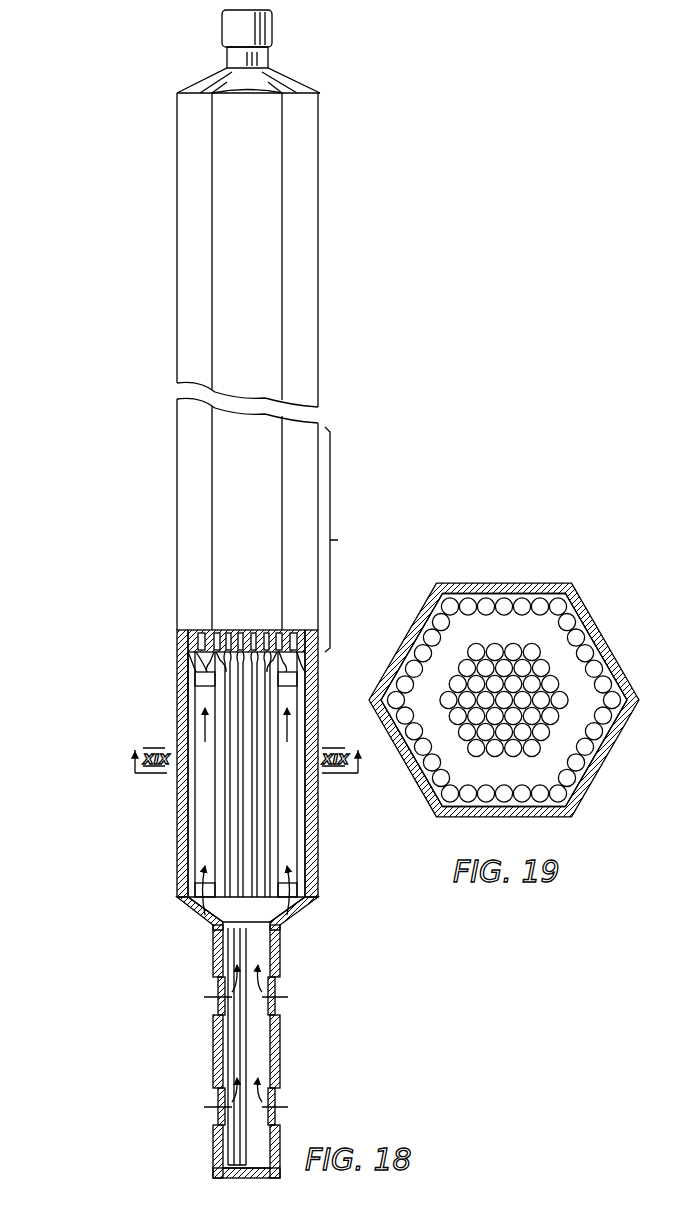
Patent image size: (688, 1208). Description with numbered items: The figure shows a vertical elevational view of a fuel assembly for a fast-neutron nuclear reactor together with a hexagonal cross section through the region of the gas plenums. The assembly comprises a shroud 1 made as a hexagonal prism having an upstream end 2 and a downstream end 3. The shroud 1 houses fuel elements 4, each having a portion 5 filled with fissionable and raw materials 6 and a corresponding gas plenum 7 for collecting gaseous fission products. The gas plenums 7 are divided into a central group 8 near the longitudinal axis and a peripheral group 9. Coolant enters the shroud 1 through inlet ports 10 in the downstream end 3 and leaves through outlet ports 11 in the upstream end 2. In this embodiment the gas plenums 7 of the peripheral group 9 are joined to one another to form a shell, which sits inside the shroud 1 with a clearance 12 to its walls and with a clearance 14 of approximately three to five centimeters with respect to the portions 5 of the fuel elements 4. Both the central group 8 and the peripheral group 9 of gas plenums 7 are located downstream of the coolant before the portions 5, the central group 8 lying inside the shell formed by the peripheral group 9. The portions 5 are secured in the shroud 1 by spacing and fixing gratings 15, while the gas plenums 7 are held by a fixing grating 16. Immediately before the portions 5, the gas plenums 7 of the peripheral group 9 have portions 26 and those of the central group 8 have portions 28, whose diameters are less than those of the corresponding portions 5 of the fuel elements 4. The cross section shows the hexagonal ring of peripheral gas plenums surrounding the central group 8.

In FIG. 18, the shroud 1 is at (305, 300).
In FIG. 19, the shroud 1 is at (472, 585).
In FIG. 18, the upstream end 2 is at (265, 28).
In FIG. 18, the downstream end 3 is at (277, 1045).
In FIG. 18, the fuel elements 4 is at (180, 640).
In FIG. 18, the portions filled with fissionable and raw materials 5 is at (339, 539).
In FIG. 18, the fissionable and raw materials 6 is at (190, 640).
In FIG. 18, the gas plenums 7 is at (190, 793).
In FIG. 19, the gas plenums 7 is at (526, 652).
In FIG. 18, the central group 8 is at (212, 860).
In FIG. 19, the central group 8 is at (513, 760).
In FIG. 18, the peripheral group 9 is at (183, 818).
In FIG. 19, the peripheral group 9 is at (447, 810).
In FIG. 18, the inlet ports 10 is at (220, 1005).
In FIG. 18, the outlet ports 11 is at (282, 82).
In FIG. 18, the clearance 12 is at (310, 790).
In FIG. 19, the clearance 12 is at (413, 640).
In FIG. 18, the clearance 14 is at (192, 666).
In FIG. 18, the spacing and fixing gratings 15 is at (182, 660).
In FIG. 18, the fixing grating 16 is at (284, 918).
In FIG. 18, the portions of reduced diameter 26 is at (300, 672).
In FIG. 18, the portions of reduced diameter 28 is at (183, 690).